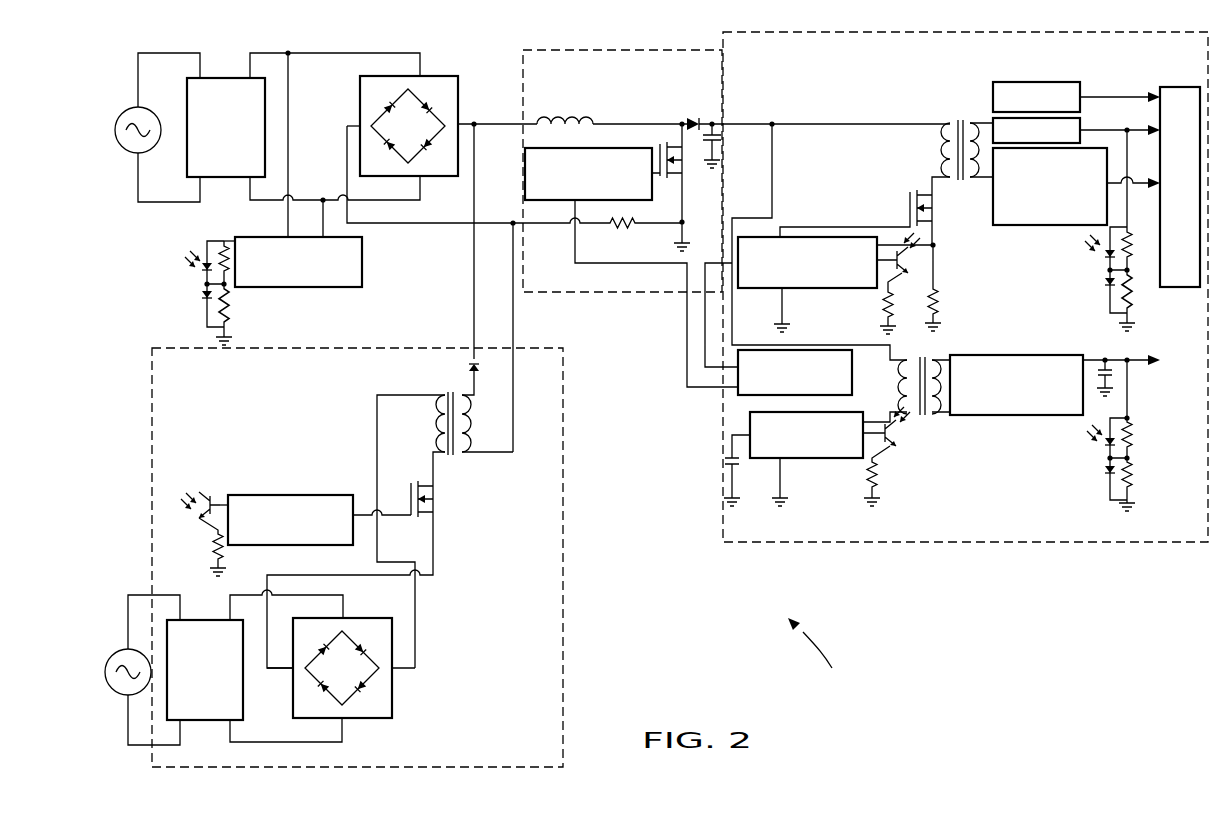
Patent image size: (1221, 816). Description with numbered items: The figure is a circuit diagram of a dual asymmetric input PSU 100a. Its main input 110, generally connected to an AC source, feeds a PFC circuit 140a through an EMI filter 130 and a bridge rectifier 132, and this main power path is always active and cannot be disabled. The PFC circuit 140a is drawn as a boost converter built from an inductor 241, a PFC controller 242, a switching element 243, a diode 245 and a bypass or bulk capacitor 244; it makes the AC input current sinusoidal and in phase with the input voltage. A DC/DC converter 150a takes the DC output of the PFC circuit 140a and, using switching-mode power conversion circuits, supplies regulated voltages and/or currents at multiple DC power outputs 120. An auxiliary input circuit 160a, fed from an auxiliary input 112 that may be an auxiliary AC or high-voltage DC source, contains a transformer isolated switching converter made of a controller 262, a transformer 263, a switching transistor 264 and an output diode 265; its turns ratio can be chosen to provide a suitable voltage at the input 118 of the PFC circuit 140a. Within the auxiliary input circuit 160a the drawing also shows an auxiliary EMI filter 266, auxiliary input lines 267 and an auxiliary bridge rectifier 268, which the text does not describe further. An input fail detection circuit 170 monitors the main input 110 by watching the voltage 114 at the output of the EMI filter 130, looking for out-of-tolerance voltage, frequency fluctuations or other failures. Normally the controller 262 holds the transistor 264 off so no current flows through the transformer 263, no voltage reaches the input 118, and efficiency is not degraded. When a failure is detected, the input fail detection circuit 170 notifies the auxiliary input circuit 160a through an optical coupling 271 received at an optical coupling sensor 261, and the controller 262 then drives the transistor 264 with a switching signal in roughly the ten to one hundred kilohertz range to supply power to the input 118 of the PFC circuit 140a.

The dual asymmetric input PSU 100a is at (820, 653).
The main input 110 is at (126, 110).
The auxiliary input 112 is at (122, 650).
The voltage at the output of the EMI filter 114 is at (340, 52).
The input of PFC circuit 118 is at (486, 124).
The DC power outputs 120 is at (1106, 128).
The EMI filter 130 is at (230, 78).
The bridge rectifier 132 is at (446, 75).
The PFC circuit 140a is at (613, 50).
The DC/DC converter 150a is at (787, 543).
The auxiliary input circuit 160a is at (565, 523).
The input fail detection circuit 170 is at (362, 263).
The inductor 241 is at (599, 110).
The PFC controller 242 is at (542, 201).
The switching element 243 is at (682, 113).
The bulk capacitor 244 is at (716, 132).
The diode 245 is at (700, 118).
The optical coupling sensor 261 is at (198, 532).
The controller 262 is at (318, 495).
The transformer 263 is at (460, 454).
The switching transistor 264 is at (411, 480).
The output diode 265 is at (480, 366).
The auxiliary EMI filter 266 is at (215, 721).
The auxiliary input lines 267 is at (257, 583).
The auxiliary bridge rectifier 268 is at (393, 687).
The optical coupling 271 is at (205, 255).